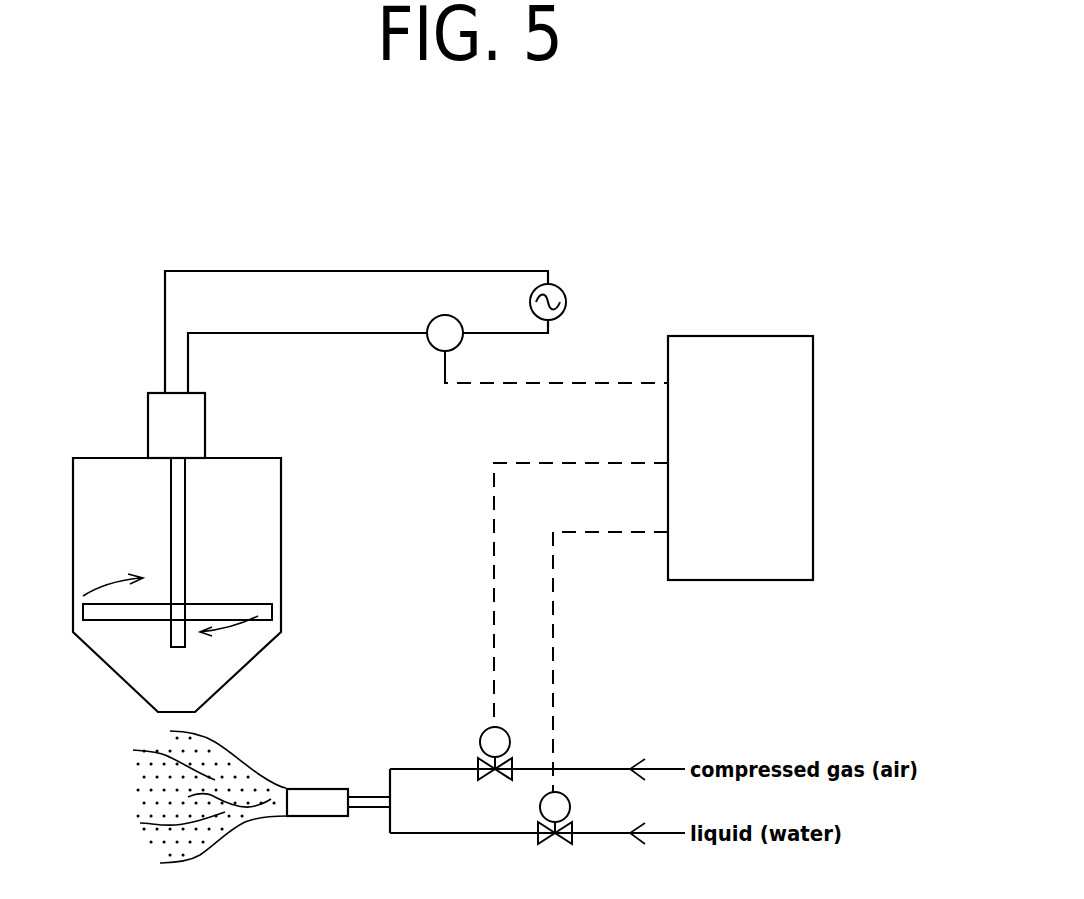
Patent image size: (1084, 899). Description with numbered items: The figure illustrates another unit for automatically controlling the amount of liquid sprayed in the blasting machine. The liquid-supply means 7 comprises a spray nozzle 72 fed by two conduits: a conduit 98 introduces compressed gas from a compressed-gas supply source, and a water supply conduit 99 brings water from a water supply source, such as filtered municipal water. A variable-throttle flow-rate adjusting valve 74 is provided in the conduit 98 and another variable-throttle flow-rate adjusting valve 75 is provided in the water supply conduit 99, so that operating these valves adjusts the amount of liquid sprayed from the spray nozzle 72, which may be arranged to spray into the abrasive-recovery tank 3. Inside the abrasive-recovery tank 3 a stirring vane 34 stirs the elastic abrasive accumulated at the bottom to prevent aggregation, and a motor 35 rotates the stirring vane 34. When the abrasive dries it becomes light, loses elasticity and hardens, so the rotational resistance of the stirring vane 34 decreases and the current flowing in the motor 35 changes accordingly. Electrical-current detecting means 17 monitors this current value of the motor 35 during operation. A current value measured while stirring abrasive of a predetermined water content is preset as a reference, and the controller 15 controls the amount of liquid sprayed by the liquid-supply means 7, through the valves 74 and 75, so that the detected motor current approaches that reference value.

The abrasive-recovery tank 3 is at (281, 515).
The liquid-supply means 7 is at (612, 706).
The controller 15 is at (813, 400).
The electrical-current detecting means 17 is at (430, 346).
The stirring vane 34 is at (127, 620).
The motor 35 is at (205, 421).
The spray nozzle 72 is at (313, 789).
The variable-throttle flow-rate adjusting valve 74 is at (496, 772).
The variable-throttle flow-rate adjusting valve 75 is at (556, 836).
The conduit 98 is at (428, 769).
The water supply conduit 99 is at (415, 833).